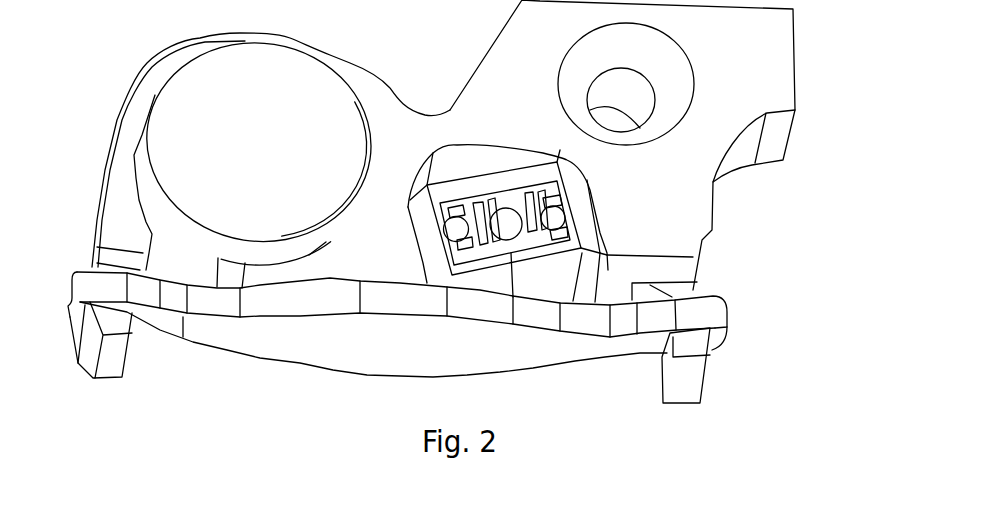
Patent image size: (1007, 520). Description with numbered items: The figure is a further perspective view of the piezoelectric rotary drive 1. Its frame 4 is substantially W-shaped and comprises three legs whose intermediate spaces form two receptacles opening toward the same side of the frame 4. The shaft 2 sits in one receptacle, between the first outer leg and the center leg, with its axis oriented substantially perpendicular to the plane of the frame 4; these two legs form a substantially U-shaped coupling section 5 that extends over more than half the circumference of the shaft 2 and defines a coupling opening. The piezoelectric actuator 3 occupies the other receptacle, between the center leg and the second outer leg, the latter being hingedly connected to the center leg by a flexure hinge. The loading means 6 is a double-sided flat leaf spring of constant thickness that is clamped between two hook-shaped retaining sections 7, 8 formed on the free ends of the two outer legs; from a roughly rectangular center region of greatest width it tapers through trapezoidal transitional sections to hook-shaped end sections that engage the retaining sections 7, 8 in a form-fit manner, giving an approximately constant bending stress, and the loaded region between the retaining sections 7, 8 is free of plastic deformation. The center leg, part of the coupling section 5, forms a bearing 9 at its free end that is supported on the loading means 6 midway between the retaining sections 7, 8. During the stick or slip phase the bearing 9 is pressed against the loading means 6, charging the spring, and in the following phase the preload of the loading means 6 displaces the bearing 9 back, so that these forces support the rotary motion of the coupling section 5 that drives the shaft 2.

The piezoelectric rotary drive 1 is at (564, 440).
The shaft 2 is at (267, 159).
The piezoelectric actuator 3 is at (479, 203).
The frame 4 is at (762, 239).
The coupling section 5 is at (119, 50).
The loading means 6 is at (229, 392).
The retaining section 7 is at (90, 377).
The retaining section 8 is at (690, 378).
The bearing 9 is at (388, 263).